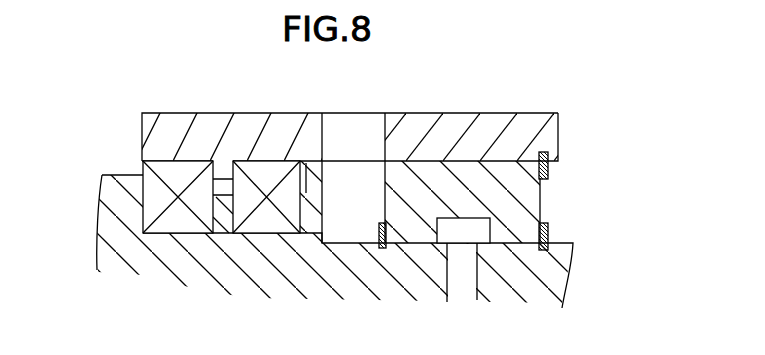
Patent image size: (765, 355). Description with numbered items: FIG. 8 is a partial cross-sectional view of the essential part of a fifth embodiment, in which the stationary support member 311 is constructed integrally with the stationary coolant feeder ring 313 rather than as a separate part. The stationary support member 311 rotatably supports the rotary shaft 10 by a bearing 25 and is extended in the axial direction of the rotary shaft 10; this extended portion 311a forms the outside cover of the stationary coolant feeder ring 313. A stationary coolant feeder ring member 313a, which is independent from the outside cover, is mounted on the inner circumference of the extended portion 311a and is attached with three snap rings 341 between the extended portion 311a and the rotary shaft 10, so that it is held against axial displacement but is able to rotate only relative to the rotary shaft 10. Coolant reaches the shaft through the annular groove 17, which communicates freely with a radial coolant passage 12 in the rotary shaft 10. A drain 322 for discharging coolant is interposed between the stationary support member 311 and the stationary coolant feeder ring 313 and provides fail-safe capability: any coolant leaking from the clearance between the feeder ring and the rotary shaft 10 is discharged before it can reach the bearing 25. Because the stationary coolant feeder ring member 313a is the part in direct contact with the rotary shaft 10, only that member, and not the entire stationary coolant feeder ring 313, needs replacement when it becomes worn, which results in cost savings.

The rotary shaft 10 is at (508, 270).
The radial coolant passage 12 is at (462, 277).
The annular groove 17 is at (457, 228).
The bearing 25 is at (265, 222).
The stationary support member 311 is at (243, 130).
The extended portion 311a is at (493, 132).
The stationary coolant feeder ring 313 is at (563, 89).
The stationary coolant feeder ring member 313a is at (530, 205).
The drain for discharging coolant 322 is at (343, 142).
The snap rings 341 is at (549, 167).